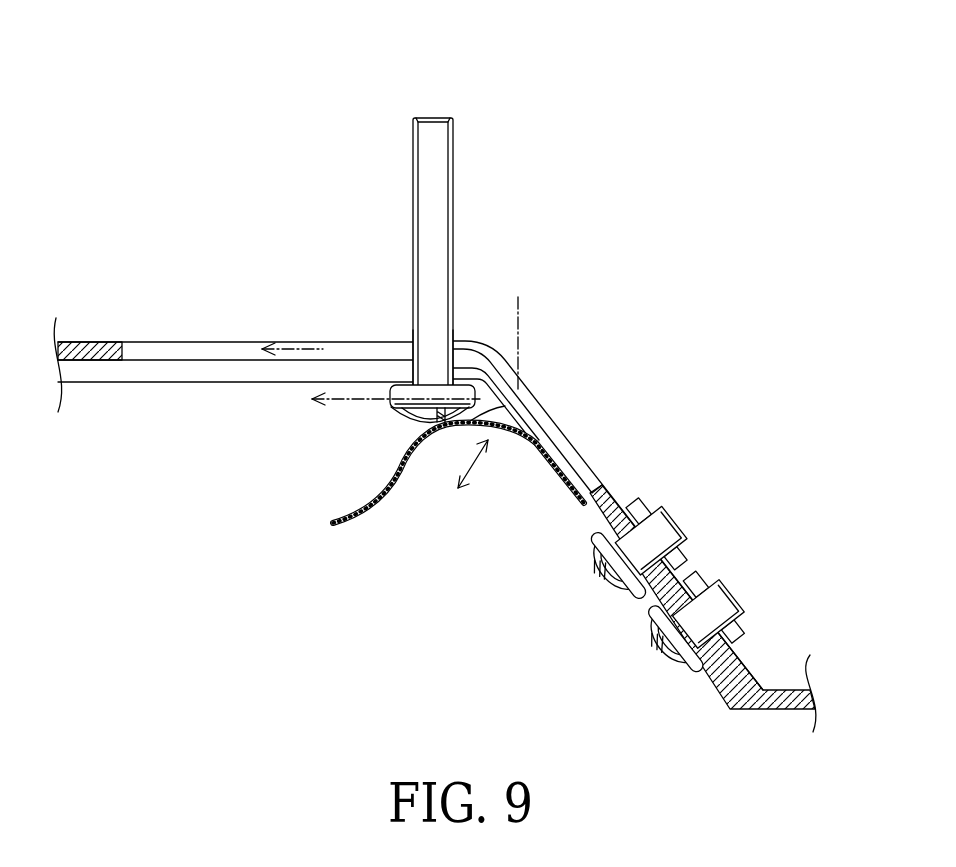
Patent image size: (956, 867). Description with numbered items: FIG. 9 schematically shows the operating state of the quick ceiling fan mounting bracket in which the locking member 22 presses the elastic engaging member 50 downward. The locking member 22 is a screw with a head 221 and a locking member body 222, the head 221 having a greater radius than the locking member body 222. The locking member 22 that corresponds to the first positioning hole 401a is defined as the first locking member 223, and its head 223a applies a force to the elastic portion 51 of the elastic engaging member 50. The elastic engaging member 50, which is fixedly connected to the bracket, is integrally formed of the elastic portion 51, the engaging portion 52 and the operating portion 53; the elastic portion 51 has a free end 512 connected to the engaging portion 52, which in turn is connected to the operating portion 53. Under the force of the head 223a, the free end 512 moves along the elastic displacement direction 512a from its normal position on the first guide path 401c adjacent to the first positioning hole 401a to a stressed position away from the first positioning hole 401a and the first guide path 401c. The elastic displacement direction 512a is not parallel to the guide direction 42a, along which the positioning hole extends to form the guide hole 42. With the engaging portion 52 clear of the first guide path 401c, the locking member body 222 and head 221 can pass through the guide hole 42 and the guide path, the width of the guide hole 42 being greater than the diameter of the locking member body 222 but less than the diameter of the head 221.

The locking member 22 is at (464, 195).
The locking member body 222 is at (435, 170).
The first locking member 223 is at (440, 135).
The head of the first locking member 223a is at (397, 386).
The guide hole 42 is at (204, 348).
The guide direction 42a is at (294, 343).
The first positioning hole 401a is at (578, 459).
The first guide path 401c is at (519, 328).
The free end 512 is at (478, 420).
The elastic displacement direction 512a is at (464, 485).
The head 221 is at (397, 406).
The engaging portion 52 is at (405, 417).
The operating portion 53 is at (335, 522).
The elastic portion 51 is at (648, 598).
The elastic engaging member 50 is at (707, 672).